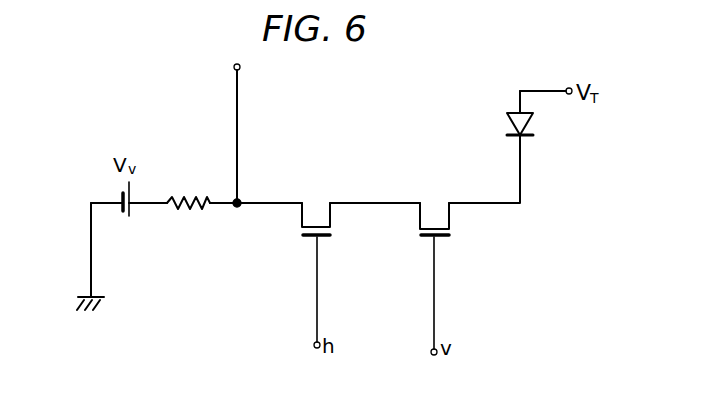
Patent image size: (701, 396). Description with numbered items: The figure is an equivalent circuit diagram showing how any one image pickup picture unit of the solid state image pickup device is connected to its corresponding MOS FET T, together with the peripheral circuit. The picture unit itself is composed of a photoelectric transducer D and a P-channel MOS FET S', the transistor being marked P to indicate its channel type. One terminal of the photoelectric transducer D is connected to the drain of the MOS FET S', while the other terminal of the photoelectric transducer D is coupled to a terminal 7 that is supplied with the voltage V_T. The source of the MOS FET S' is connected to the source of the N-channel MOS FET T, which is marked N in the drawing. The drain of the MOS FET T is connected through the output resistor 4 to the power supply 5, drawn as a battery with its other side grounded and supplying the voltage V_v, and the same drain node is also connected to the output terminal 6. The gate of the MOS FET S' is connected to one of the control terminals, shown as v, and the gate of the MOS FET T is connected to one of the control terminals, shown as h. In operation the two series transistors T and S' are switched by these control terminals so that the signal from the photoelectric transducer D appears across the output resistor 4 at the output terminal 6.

The output resistor 4 is at (186, 212).
The power supply 5 is at (126, 220).
The output terminal 6 is at (240, 67).
The terminal 7 is at (569, 95).
The N-channel MOS FET N is at (316, 216).
The P-channel MOS FET P is at (434, 218).
The MOS FET T is at (304, 238).
The MOS FET S' is at (456, 296).
The photoelectric transducer D is at (506, 122).